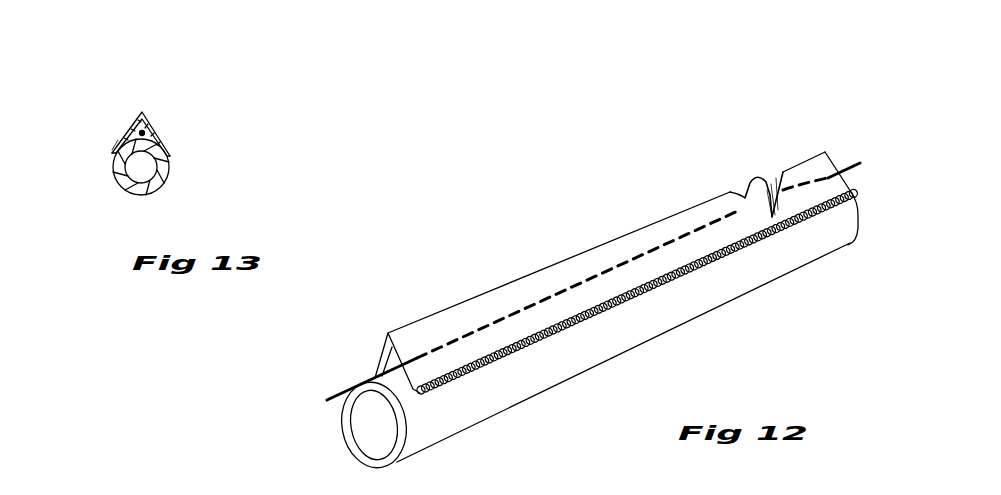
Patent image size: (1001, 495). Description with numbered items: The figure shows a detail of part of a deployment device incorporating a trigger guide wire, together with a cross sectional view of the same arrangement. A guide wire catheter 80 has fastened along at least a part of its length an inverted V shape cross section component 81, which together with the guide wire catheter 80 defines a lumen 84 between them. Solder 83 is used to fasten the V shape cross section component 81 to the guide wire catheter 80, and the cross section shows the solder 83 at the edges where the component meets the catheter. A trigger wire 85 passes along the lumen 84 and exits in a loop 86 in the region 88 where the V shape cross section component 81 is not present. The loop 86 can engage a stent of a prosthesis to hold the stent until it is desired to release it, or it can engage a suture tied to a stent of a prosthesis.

In FIG. 12, the guide wire catheter 80 is at (348, 425).
In FIG. 13, the guide wire catheter 80 is at (120, 187).
In FIG. 12, the V shape cross section component 81 is at (547, 277).
In FIG. 13, the V shape cross section component 81 is at (142, 115).
In FIG. 12, the solder 83 is at (515, 352).
In FIG. 13, the solder 83 is at (117, 147).
In FIG. 12, the lumen 84 is at (390, 352).
In FIG. 13, the lumen 84 is at (133, 120).
In FIG. 12, the trigger wire 85 is at (345, 383).
In FIG. 13, the trigger wire 85 is at (152, 128).
In FIG. 12, the loop 86 is at (748, 180).
In FIG. 12, the region 88 is at (725, 180).